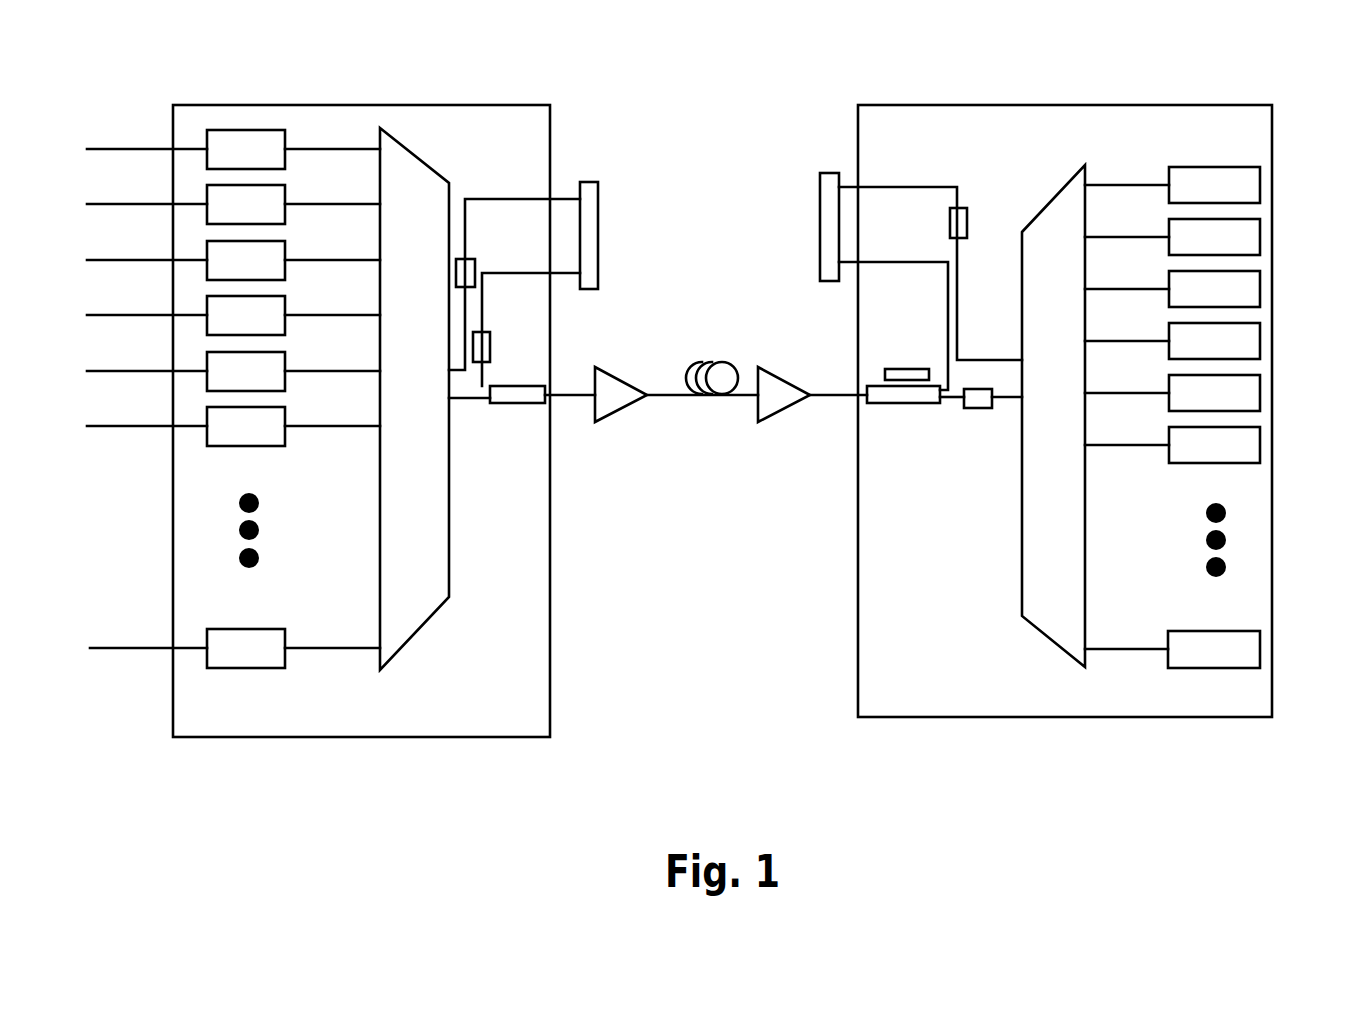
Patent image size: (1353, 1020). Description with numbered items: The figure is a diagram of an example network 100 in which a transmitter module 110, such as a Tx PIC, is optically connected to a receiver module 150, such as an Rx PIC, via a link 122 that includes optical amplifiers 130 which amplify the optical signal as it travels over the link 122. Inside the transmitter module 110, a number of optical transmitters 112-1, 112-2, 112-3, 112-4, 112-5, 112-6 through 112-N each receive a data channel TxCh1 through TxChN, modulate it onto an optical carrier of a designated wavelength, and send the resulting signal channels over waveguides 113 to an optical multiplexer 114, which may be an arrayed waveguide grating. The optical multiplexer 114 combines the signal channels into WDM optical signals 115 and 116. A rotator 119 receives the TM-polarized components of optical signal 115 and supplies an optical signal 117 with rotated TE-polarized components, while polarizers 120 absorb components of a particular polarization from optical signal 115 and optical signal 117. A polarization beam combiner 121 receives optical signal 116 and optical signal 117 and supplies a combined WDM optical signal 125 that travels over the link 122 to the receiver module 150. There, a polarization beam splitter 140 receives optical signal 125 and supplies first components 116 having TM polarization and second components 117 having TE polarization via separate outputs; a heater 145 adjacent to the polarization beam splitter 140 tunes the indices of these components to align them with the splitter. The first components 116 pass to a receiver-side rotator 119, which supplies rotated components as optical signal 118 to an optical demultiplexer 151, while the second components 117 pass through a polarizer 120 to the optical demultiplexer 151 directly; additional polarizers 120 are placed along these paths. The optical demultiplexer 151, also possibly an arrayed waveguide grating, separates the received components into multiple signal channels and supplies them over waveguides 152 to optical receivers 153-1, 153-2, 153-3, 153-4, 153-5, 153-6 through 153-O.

The network 100 is at (218, 24).
The transmitter module 110 is at (522, 104).
The optical transmitter 112-1 is at (285, 135).
The optical transmitter 112-2 is at (285, 190).
The optical transmitter 112-3 is at (285, 246).
The optical transmitter 112-4 is at (285, 301).
The optical transmitter 112-5 is at (285, 357).
The optical transmitter 112-6 is at (285, 412).
The optical transmitter 112-N is at (285, 634).
The waveguides 113 is at (330, 670).
The optical multiplexer 114 is at (418, 158).
The optical signal 115 is at (540, 198).
The optical signal 116 is at (467, 399).
The optical signal 117 is at (535, 272).
The optical signal 118 is at (943, 187).
The rotator 119 is at (599, 218).
The polarizer 120 is at (475, 280).
The polarization beam combiner 121 is at (535, 404).
The link 122 is at (720, 362).
The optical signal 125 is at (582, 397).
The optical amplifier 130 is at (631, 350).
The polarization beam splitter 140 is at (912, 404).
The heater 145 is at (903, 368).
The receiver module 150 is at (1273, 107).
The optical demultiplexer 151 is at (1054, 200).
The waveguides 152 is at (1135, 660).
The optical receiver 153-1 is at (1260, 183).
The optical receiver 153-2 is at (1260, 235).
The optical receiver 153-3 is at (1260, 287).
The optical receiver 153-4 is at (1260, 339).
The optical receiver 153-5 is at (1260, 391).
The optical receiver 153-6 is at (1260, 443).
The optical receiver 153-O is at (1260, 647).